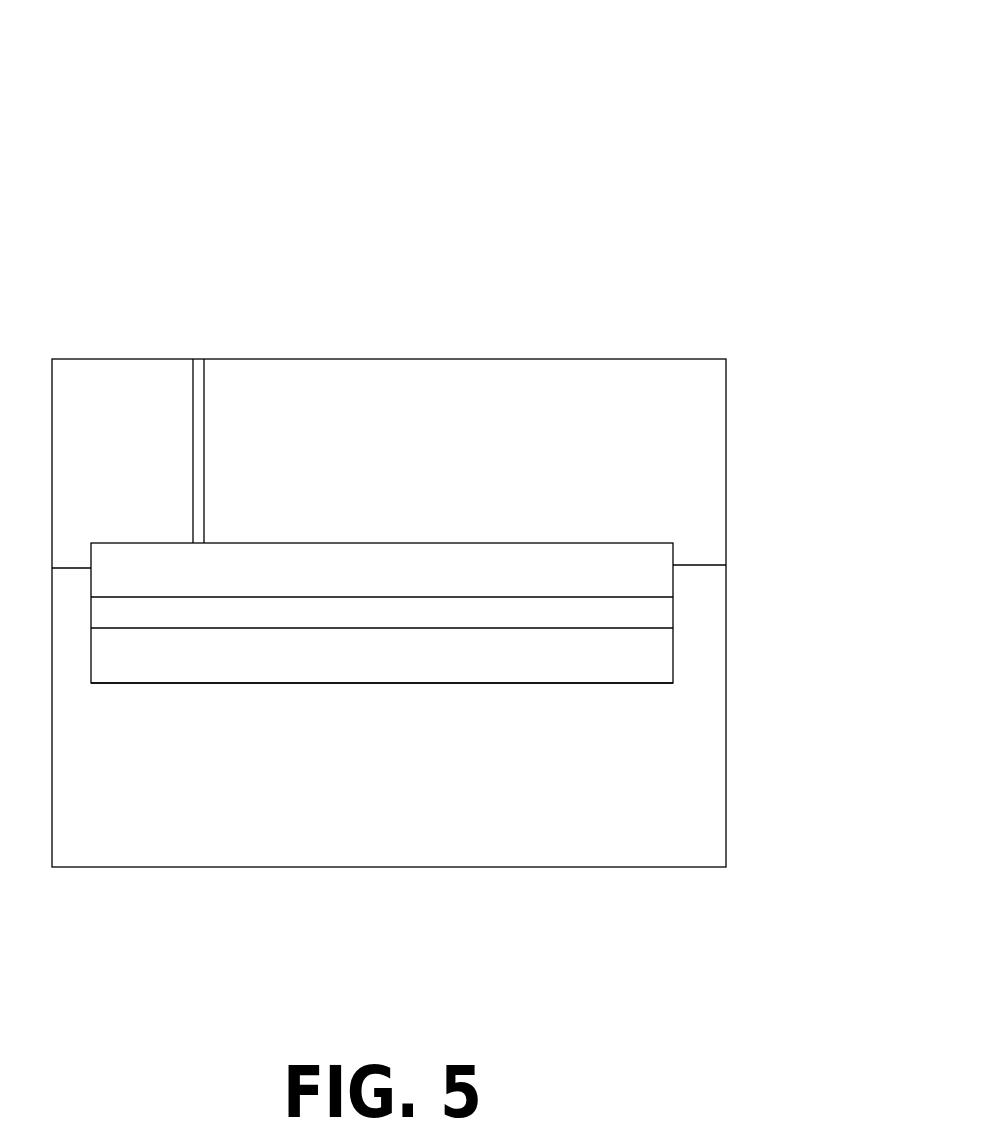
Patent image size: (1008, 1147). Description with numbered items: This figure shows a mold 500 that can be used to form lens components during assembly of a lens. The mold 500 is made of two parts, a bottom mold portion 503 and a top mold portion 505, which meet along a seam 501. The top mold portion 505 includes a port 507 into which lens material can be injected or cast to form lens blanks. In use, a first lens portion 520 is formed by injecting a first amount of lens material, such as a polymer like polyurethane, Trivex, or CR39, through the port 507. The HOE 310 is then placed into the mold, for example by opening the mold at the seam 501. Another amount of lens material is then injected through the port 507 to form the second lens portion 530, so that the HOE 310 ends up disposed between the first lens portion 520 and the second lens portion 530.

The mold 500 is at (90, 33).
The bottom mold portion 503 is at (694, 430).
The top mold portion 505 is at (694, 833).
The port 507 is at (212, 410).
The seam 501 is at (700, 565).
The second lens portion 530 is at (523, 570).
The HOE 310 is at (627, 609).
The first lens portion 520 is at (350, 660).